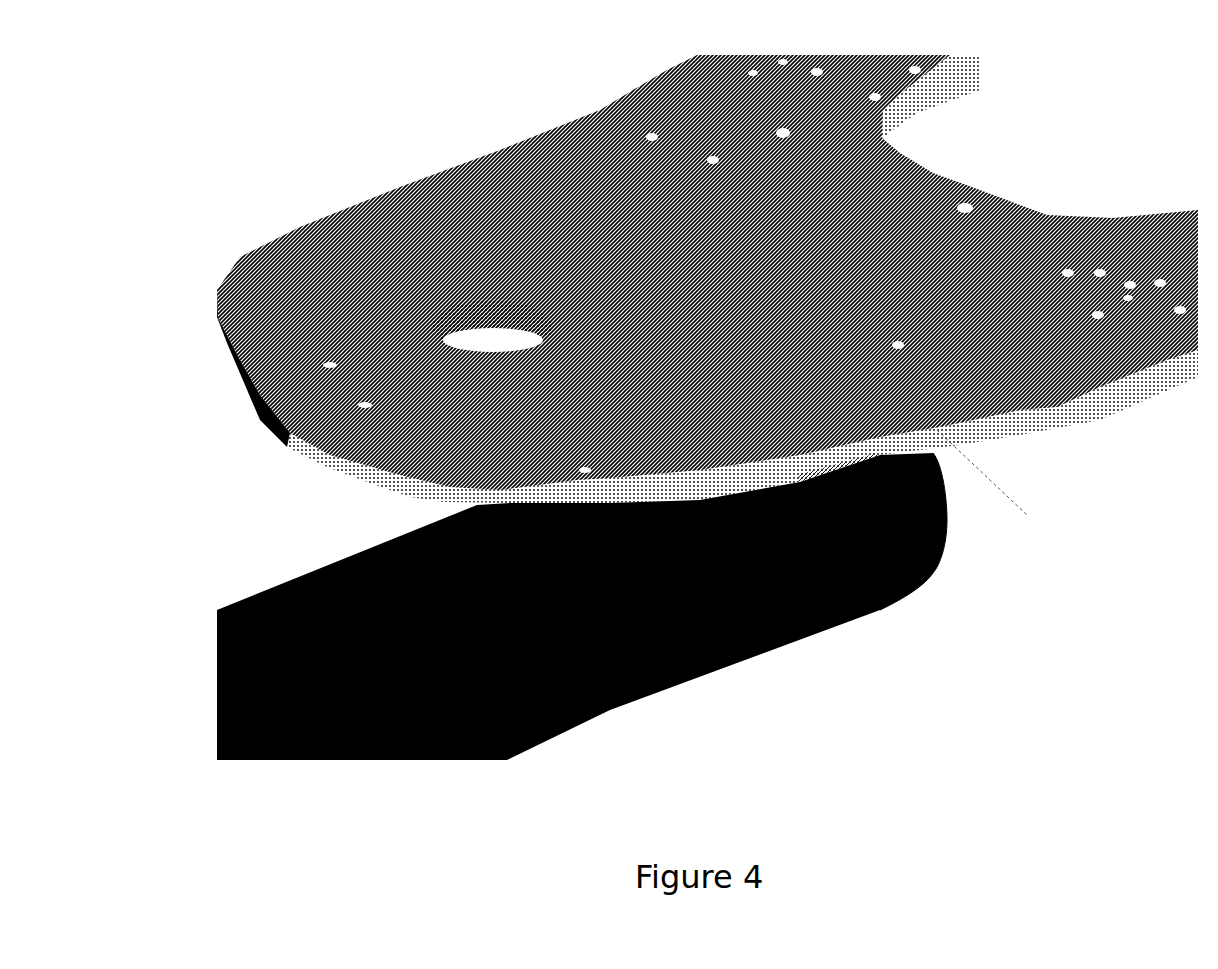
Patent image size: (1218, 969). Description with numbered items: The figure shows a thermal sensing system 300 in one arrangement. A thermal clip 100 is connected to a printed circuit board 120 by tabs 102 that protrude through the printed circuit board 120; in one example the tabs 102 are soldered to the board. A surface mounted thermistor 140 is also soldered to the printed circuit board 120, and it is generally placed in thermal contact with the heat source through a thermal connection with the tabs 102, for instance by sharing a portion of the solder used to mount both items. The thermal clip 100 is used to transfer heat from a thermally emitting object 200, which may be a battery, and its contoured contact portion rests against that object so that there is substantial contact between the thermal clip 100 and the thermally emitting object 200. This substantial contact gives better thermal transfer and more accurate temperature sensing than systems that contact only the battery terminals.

The thermal sensing system 300 is at (341, 130).
The printed circuit board 120 is at (707, 255).
The thermistor 140 is at (722, 220).
The tabs 102 is at (938, 173).
The thermal clip 100 is at (932, 575).
The thermally emitting object 200 is at (690, 683).